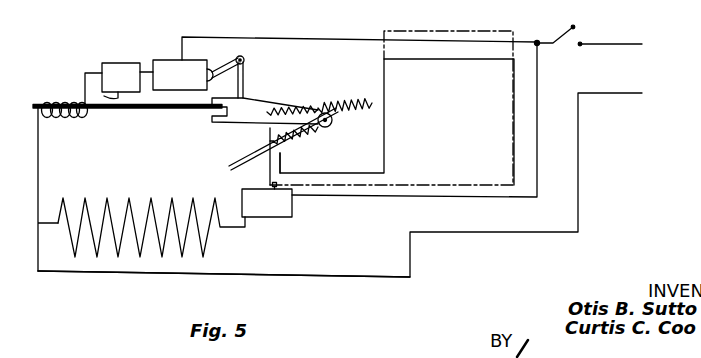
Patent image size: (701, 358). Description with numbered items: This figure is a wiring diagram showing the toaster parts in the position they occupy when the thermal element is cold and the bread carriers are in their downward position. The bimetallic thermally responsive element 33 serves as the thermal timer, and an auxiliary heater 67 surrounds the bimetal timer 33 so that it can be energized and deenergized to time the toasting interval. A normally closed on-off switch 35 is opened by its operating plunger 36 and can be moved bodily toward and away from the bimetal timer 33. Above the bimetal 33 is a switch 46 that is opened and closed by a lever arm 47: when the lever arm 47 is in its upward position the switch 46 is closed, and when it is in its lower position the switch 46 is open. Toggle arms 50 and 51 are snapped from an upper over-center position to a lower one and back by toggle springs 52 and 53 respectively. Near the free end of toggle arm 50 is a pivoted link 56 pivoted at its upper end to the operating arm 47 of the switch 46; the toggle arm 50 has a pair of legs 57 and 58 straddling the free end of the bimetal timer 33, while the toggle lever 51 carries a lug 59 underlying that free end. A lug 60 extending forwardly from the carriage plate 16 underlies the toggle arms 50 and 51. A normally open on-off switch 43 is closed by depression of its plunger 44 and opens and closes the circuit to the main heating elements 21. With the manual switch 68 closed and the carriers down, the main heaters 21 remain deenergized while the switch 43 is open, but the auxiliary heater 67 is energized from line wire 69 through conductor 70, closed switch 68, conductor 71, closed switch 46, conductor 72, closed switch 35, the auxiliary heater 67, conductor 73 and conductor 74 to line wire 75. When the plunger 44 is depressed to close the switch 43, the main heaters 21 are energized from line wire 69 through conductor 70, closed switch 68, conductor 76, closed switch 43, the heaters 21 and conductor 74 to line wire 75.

The carriage plate 16 is at (392, 108).
The heating elements 21 is at (108, 200).
The bimetallic thermally responsive element 33 is at (135, 112).
The on-off switch 35 is at (112, 83).
The operating plunger 36 is at (102, 97).
The on-off switch 43 is at (267, 203).
The plunger 44 is at (272, 184).
The switch 46 is at (183, 75).
The lever arm 47 is at (222, 70).
The toggle arm 50 is at (267, 112).
The toggle arm 51 is at (272, 122).
The toggle spring 52 is at (338, 106).
The toggle spring 53 is at (340, 113).
The pivoted link 56 is at (245, 61).
The leg 57 is at (214, 98).
The leg 58 is at (216, 124).
The lug 59 is at (229, 165).
The lug 60 is at (283, 160).
The auxiliary heater 67 is at (77, 102).
The manual switch 68 is at (566, 33).
The line wire 69 is at (605, 44).
The conductor 70 is at (592, 45).
The conductor 71 is at (320, 38).
The conductor 72 is at (147, 70).
The conductor 73 is at (40, 157).
The conductor 74 is at (282, 272).
The line wire 75 is at (620, 94).
The conductor 76 is at (538, 137).